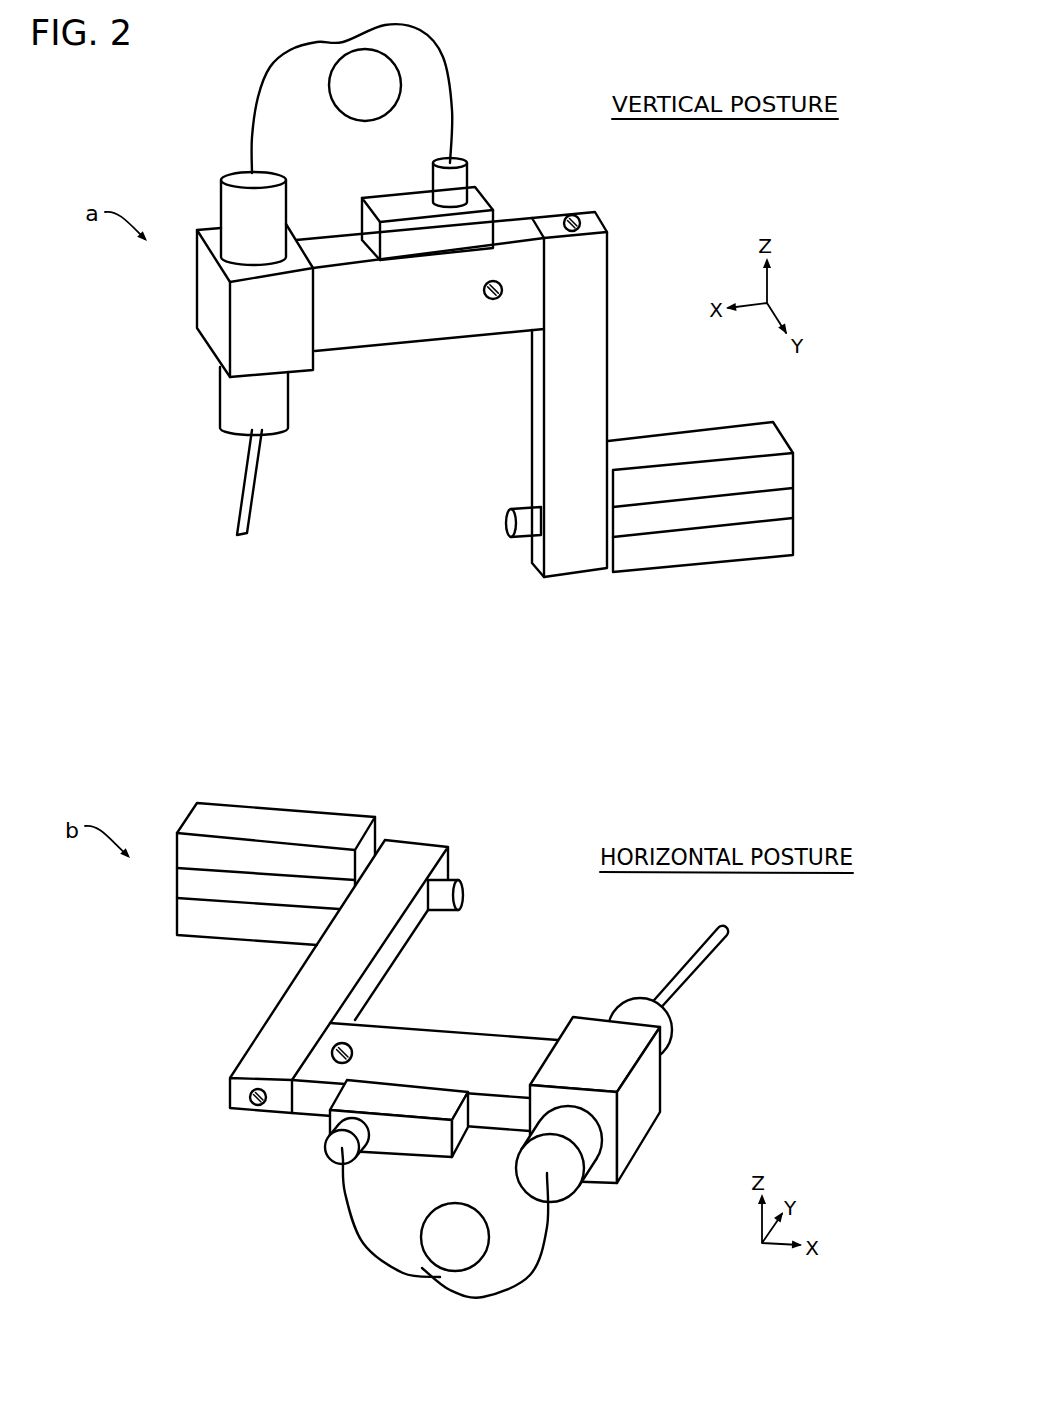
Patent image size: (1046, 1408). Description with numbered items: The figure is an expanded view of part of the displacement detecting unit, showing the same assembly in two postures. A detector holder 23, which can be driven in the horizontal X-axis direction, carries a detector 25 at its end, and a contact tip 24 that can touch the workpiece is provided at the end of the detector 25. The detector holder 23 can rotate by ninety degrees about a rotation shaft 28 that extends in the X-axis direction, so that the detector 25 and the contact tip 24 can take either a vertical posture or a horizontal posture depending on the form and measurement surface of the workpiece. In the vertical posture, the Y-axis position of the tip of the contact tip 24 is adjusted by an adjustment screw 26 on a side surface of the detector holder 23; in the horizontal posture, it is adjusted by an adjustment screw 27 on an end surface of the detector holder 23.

The detector holder 23 is at (535, 441).
The contact tip 24 is at (240, 513).
The detector 25 is at (227, 402).
The adjustment screw 26 is at (493, 300).
The adjustment screw 27 is at (583, 212).
The rotation shaft 28 is at (507, 521).